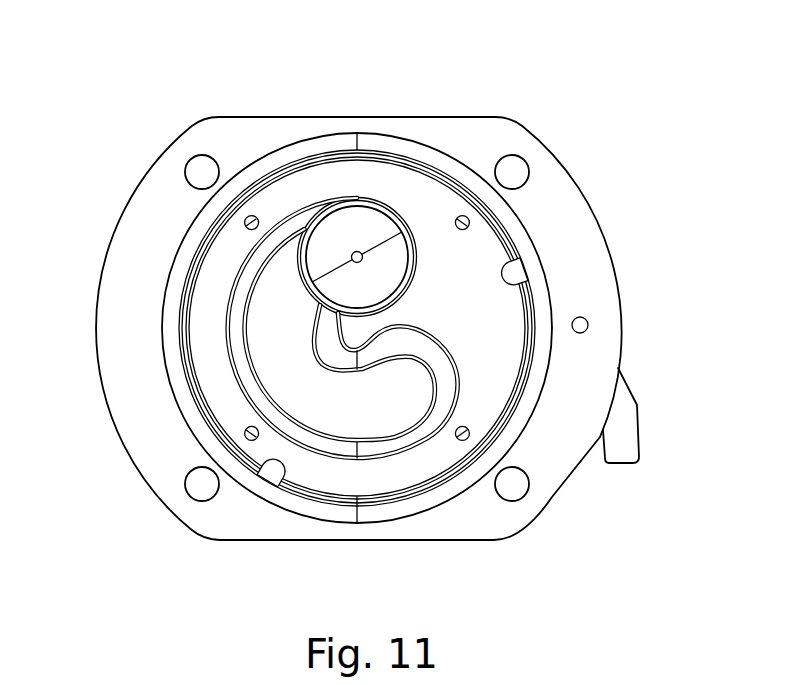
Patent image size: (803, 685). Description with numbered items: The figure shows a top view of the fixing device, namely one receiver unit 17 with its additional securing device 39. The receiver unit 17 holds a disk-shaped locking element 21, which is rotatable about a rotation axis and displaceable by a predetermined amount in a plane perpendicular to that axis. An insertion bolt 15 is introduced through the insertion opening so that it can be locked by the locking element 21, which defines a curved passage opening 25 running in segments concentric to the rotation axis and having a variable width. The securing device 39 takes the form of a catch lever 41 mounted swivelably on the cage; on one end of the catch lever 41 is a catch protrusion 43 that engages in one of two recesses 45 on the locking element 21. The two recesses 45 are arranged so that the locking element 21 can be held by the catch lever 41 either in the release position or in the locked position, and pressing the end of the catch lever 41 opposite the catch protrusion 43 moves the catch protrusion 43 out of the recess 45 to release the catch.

The receiver unit 17 is at (113, 63).
The insertion bolt 15 is at (353, 225).
The locking element 21 is at (425, 197).
The passage opening 25 is at (376, 409).
The securing device 39 is at (648, 219).
The catch lever 41 is at (627, 427).
The catch protrusion 43 is at (513, 272).
The recesses 45 is at (500, 247).